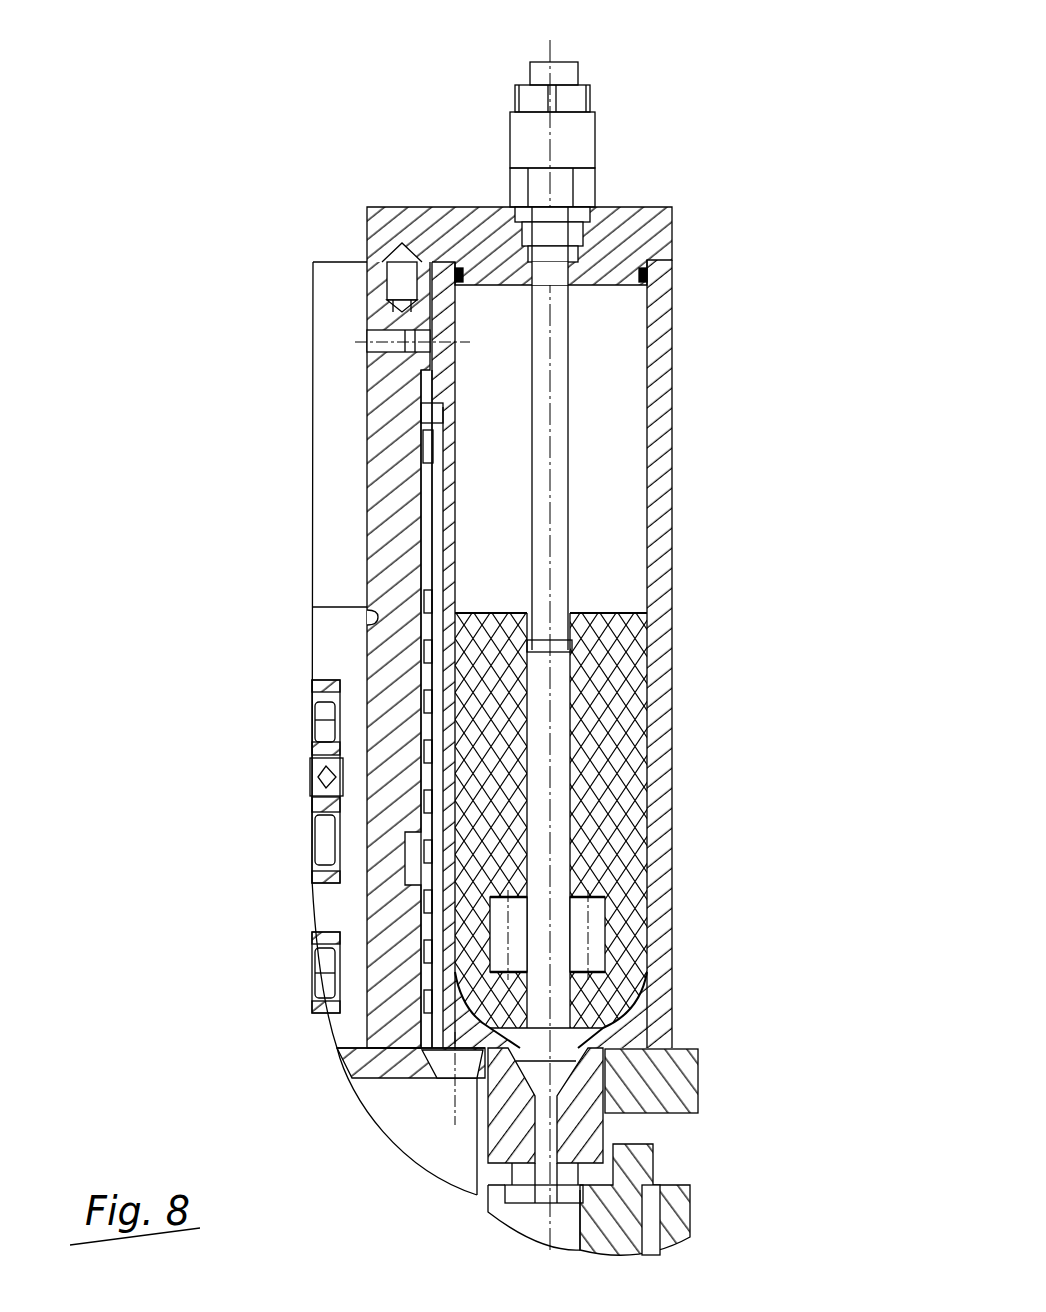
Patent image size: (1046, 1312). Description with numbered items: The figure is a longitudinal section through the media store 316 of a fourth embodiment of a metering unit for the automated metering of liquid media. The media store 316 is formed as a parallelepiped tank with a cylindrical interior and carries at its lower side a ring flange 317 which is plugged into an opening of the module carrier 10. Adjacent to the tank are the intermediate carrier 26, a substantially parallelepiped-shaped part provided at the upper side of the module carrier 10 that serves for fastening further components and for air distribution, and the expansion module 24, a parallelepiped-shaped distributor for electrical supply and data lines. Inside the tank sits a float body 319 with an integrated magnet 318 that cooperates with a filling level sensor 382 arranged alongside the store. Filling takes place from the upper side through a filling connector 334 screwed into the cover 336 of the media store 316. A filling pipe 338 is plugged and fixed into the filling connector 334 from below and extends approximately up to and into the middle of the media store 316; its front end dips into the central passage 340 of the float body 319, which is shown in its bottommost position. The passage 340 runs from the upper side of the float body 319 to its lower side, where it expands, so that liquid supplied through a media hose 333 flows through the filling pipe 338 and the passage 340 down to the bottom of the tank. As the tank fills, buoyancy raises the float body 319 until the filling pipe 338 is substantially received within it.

The module carrier 10 is at (682, 1093).
The expansion module 24 is at (335, 646).
The intermediate carrier 26 is at (380, 530).
The media store 316 is at (655, 512).
The ring flange 317 is at (585, 1133).
The magnet 318 is at (590, 940).
The float body 319 is at (630, 778).
The media hose 333 is at (568, 75).
The filling connector 334 is at (573, 152).
The cover 336 is at (650, 243).
The filling pipe 338 is at (550, 432).
The central passage 340 is at (550, 735).
The filling level sensor 382 is at (405, 868).